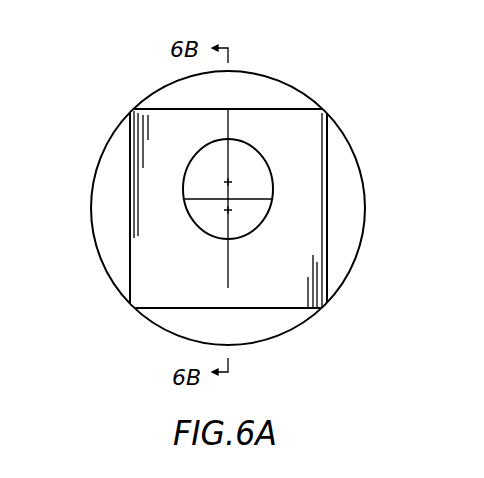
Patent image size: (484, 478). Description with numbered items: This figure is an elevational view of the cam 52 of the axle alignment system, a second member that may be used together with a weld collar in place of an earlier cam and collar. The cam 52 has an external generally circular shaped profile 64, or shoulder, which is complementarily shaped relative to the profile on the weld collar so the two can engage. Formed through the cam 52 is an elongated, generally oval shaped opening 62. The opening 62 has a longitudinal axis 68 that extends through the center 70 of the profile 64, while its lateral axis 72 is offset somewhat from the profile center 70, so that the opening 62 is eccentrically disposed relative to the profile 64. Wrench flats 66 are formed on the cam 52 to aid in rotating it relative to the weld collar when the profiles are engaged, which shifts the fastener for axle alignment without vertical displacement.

The cam 52 is at (343, 133).
The opening 62 is at (272, 167).
The profile 64 is at (108, 273).
The wrench flats 66 is at (330, 243).
The longitudinal axis 68 is at (228, 255).
The center 70 is at (228, 194).
The lateral axis 72 is at (250, 200).